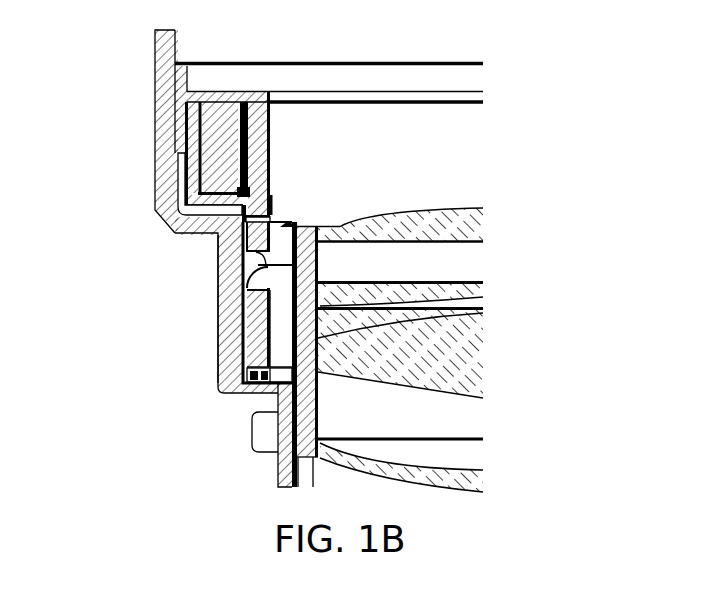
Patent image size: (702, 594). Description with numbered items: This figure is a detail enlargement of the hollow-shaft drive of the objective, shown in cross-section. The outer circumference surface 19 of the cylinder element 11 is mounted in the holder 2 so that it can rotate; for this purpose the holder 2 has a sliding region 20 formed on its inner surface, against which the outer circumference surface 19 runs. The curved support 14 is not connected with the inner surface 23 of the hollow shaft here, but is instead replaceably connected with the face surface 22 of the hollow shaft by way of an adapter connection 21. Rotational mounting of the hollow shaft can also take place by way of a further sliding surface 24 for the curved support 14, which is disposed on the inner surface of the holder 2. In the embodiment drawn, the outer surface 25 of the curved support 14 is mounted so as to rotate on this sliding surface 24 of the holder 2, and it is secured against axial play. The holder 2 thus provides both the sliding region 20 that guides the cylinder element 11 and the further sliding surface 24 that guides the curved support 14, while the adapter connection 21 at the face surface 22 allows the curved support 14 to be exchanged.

The holder 2 is at (175, 36).
The cylinder element 11 is at (203, 233).
The curved support 14 is at (235, 293).
The outer circumference surface 19 is at (185, 183).
The sliding region 20 is at (185, 112).
The adapter connection 21 is at (272, 219).
The face surface 22 is at (272, 205).
The inner surface 23 is at (270, 133).
The further sliding surface 24 is at (217, 352).
The outer surface 25 is at (217, 318).